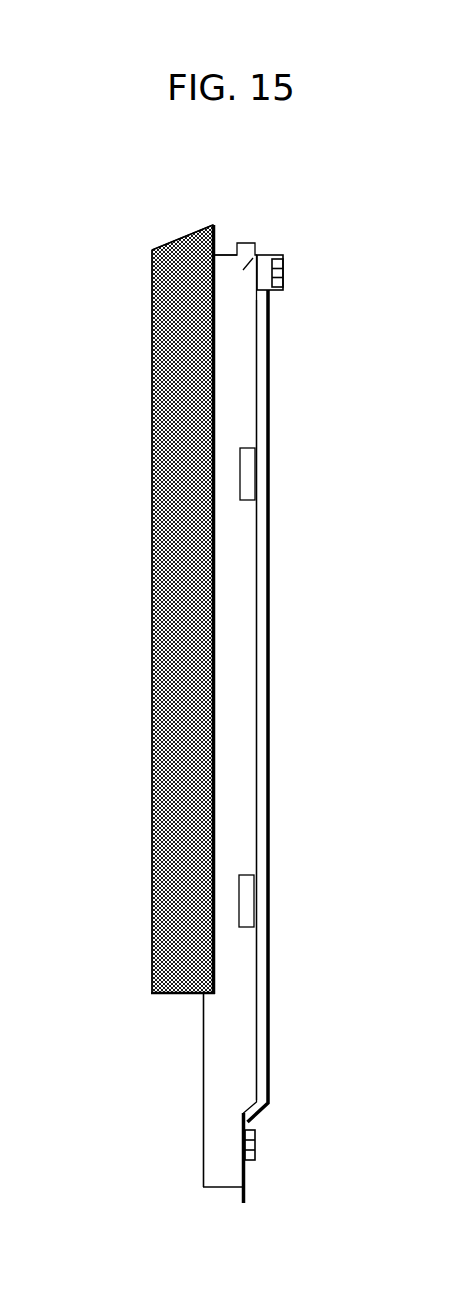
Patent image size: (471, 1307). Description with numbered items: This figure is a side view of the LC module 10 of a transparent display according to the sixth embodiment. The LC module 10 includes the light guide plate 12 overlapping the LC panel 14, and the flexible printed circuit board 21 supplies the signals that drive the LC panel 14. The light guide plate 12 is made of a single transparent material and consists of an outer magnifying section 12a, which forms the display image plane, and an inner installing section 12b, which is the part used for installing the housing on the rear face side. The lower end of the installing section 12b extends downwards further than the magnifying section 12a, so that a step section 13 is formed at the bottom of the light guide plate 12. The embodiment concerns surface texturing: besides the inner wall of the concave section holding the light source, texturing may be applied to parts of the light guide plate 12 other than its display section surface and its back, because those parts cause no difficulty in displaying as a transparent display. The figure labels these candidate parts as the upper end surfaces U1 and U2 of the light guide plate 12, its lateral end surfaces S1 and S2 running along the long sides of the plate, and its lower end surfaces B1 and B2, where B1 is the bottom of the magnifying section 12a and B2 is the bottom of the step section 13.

The LC module 10 is at (312, 245).
The light guide plate 12 is at (287, 160).
The magnifying section 12a is at (180, 242).
The installing section 12b is at (262, 254).
The step section 13 is at (203, 1083).
The LC panel 14 is at (271, 390).
The flexible printed circuit board 21 is at (246, 1199).
The upper end surface U1 is at (155, 249).
The upper end surface U2 is at (228, 254).
The lateral end surface S1 is at (152, 590).
The lateral end surface S2 is at (232, 590).
The lower end surface B1 is at (172, 994).
The lower end surface B2 is at (222, 1188).